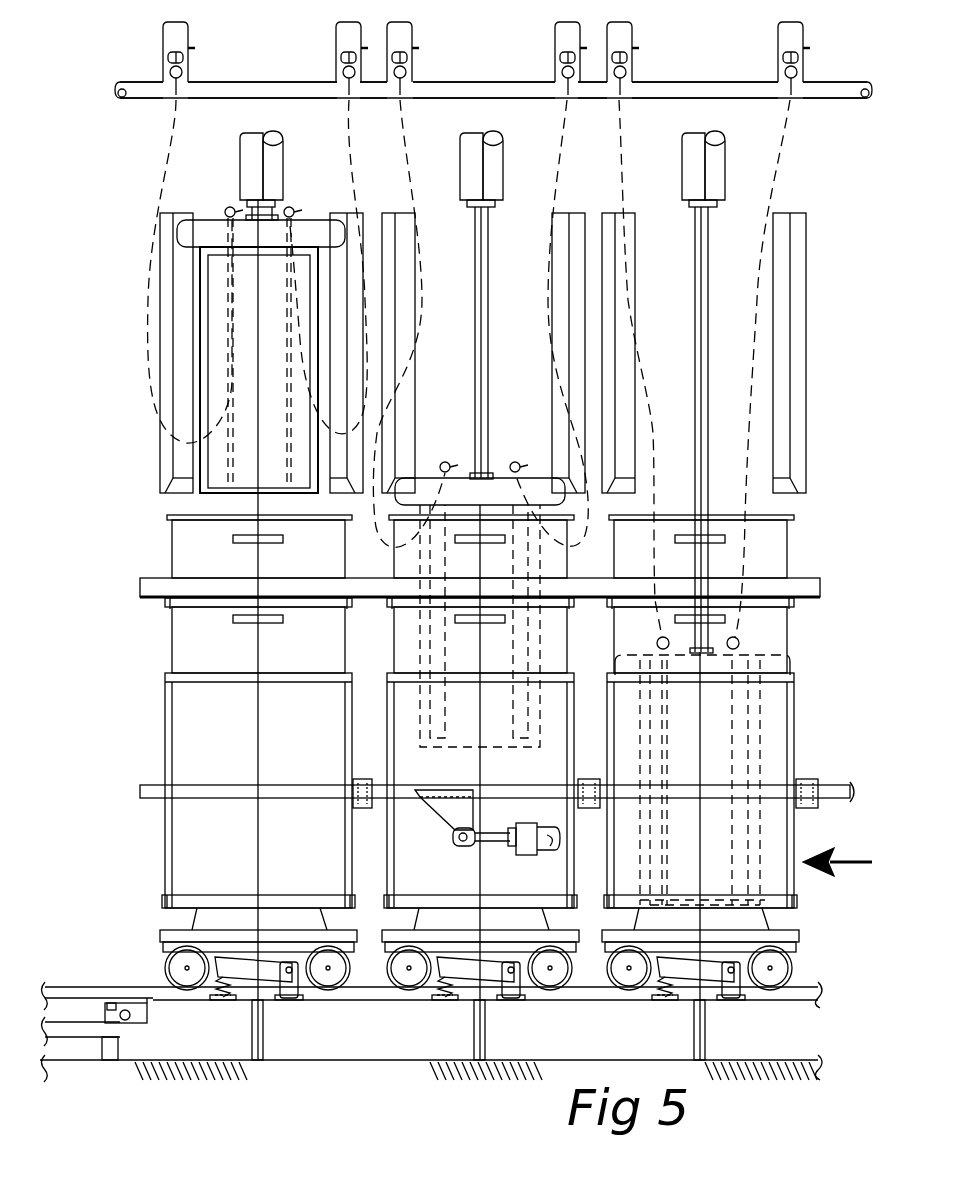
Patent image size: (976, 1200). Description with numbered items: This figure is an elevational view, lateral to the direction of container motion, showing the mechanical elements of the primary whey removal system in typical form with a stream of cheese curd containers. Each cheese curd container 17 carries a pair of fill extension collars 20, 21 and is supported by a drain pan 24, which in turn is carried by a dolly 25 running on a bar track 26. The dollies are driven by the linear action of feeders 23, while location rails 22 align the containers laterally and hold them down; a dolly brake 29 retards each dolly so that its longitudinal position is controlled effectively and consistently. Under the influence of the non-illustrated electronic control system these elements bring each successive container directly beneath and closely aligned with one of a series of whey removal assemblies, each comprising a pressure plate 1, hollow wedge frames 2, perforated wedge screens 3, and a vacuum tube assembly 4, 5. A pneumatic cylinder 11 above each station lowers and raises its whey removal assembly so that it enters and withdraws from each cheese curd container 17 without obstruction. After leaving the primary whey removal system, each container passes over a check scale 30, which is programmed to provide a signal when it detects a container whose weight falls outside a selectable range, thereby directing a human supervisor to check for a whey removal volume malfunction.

The pressure plate 1 is at (772, 676).
The hollow wedge frames 2 is at (762, 735).
The perforated wedge screens 3 is at (720, 757).
The vacuum tube assembly 4 is at (742, 666).
The vacuum tube assembly 5 is at (742, 640).
The pneumatic cylinder 11 is at (733, 180).
The cheese curd container 17 is at (165, 733).
The fill extension collar 20 is at (170, 540).
The fill extension collar 21 is at (170, 652).
The location rails 22 is at (140, 576).
The feeders 23 is at (140, 789).
The drain pan 24 is at (160, 902).
The dolly 25 is at (160, 940).
The bar track 26 is at (336, 1003).
The dolly brake 29 is at (465, 980).
The check scale 30 is at (150, 1020).